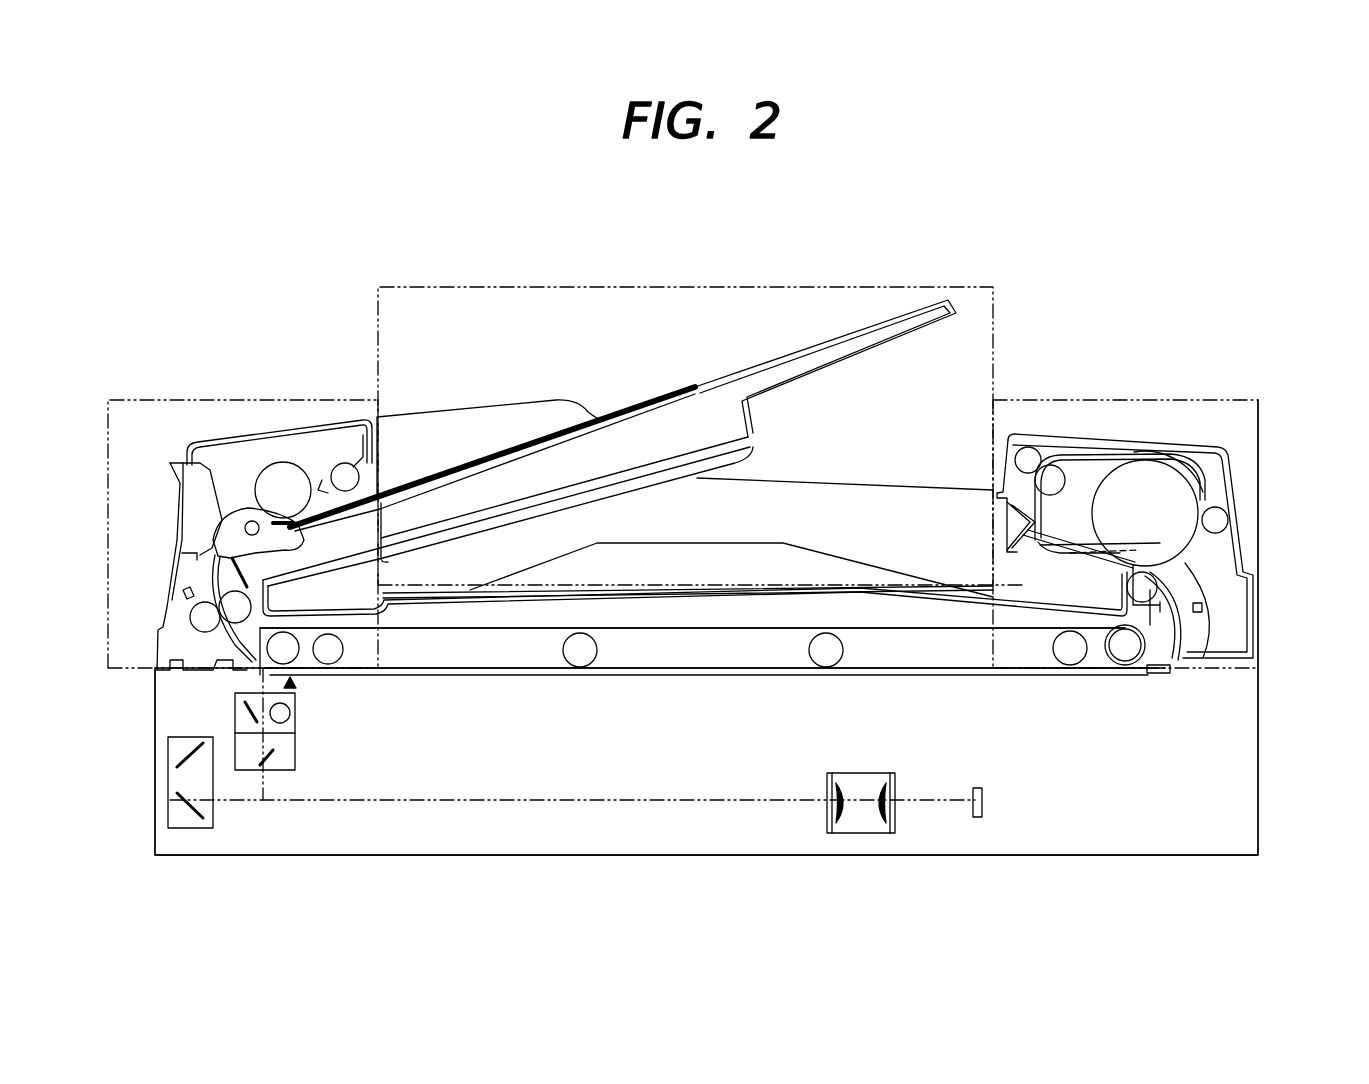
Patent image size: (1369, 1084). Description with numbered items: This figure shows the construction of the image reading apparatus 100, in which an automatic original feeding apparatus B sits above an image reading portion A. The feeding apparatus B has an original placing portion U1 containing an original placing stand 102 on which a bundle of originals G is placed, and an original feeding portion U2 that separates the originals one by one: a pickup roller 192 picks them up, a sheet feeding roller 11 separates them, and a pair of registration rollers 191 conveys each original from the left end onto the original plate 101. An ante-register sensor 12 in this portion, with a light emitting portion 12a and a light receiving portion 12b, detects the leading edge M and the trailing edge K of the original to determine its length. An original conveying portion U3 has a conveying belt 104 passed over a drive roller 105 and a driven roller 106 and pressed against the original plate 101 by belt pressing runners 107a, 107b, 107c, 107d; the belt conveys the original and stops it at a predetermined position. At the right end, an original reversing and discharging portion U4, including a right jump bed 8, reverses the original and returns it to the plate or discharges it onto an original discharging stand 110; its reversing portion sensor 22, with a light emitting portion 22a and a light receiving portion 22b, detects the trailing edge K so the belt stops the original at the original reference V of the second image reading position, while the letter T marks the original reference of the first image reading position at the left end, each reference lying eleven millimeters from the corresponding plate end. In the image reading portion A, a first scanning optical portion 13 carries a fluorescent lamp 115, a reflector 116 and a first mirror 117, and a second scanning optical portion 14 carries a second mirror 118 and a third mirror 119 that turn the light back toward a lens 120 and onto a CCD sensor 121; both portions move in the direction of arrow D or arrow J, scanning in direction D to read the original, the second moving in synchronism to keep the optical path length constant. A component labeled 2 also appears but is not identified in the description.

The image reading apparatus 100 is at (1292, 391).
The image reading portion A is at (1245, 777).
The original placing portion U1 is at (712, 285).
The original feeding portion U2 is at (172, 398).
The original conveying portion U3 is at (724, 608).
The original reversing and discharging portion U4 is at (1142, 398).
The original document 2 is at (533, 563).
The right jump bed 8 is at (1162, 676).
The sheet feeding roller 11 is at (292, 468).
The ante-register sensor 12 is at (193, 494).
The light emitting portion 12a is at (284, 590).
The light receiving portion 12b is at (183, 593).
The first scanning optical portion 13 is at (233, 768).
The second scanning optical portion 14 is at (141, 796).
The reversing portion sensor 22 is at (1225, 636).
The light emitting portion 22a is at (1128, 598).
The light receiving portion 22b is at (1203, 607).
The original plate 101 is at (503, 677).
The original placing stand 102 is at (805, 367).
The conveying belt 104 is at (695, 671).
The drive roller 105 is at (280, 655).
The driven roller 106 is at (1130, 662).
The belt pressing runner 107a is at (330, 655).
The belt pressing runner 107b is at (582, 655).
The belt pressing runner 107c is at (826, 655).
The belt pressing runner 107d is at (1070, 654).
The original discharging stand 110 is at (900, 583).
The fluorescent lamp 115 is at (287, 715).
The reflector 116 is at (244, 705).
The first mirror 117 is at (268, 762).
The second mirror 118 is at (185, 755).
The third mirror 119 is at (185, 812).
The lens 120 is at (862, 835).
The CCD sensor 121 is at (985, 805).
The registration rollers 191 is at (200, 630).
The pickup roller 192 is at (343, 465).
The automatic original feeding apparatus B is at (1245, 488).
The arrow D is at (953, 700).
The original G is at (467, 438).
The arrow J is at (940, 700).
The trailing edge of the original K is at (698, 388).
The leading edge of the original M is at (263, 457).
The original reference of the first image reading position T is at (300, 688).
The original reference of the second image reading position V is at (1120, 686).